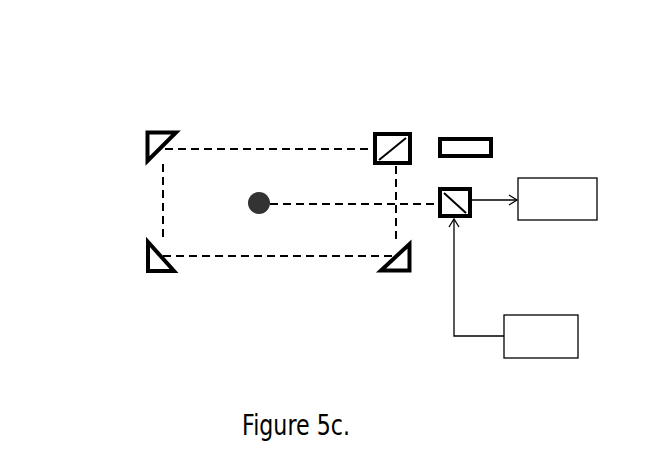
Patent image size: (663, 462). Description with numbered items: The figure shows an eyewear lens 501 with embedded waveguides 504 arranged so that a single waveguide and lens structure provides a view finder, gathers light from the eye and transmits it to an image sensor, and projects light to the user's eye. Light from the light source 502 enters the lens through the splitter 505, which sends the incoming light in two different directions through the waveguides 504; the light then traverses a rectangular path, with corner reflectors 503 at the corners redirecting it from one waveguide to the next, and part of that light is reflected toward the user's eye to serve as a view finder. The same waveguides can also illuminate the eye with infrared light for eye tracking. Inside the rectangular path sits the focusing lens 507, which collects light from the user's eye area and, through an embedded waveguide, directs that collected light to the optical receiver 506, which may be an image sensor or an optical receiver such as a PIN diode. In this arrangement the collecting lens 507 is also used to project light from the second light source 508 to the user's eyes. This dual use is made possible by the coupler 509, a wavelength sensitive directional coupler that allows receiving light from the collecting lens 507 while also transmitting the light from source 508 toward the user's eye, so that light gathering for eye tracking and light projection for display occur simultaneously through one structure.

The eyewear lens 501 is at (428, 110).
The light source 502 is at (495, 150).
The corner reflectors 503 is at (137, 128).
The embedded waveguides 504 is at (343, 190).
The splitter 505 is at (388, 127).
The optical receiver 506 is at (534, 199).
The focusing lens 507 is at (250, 217).
The light source 508 is at (513, 288).
The coupler 509 is at (480, 222).